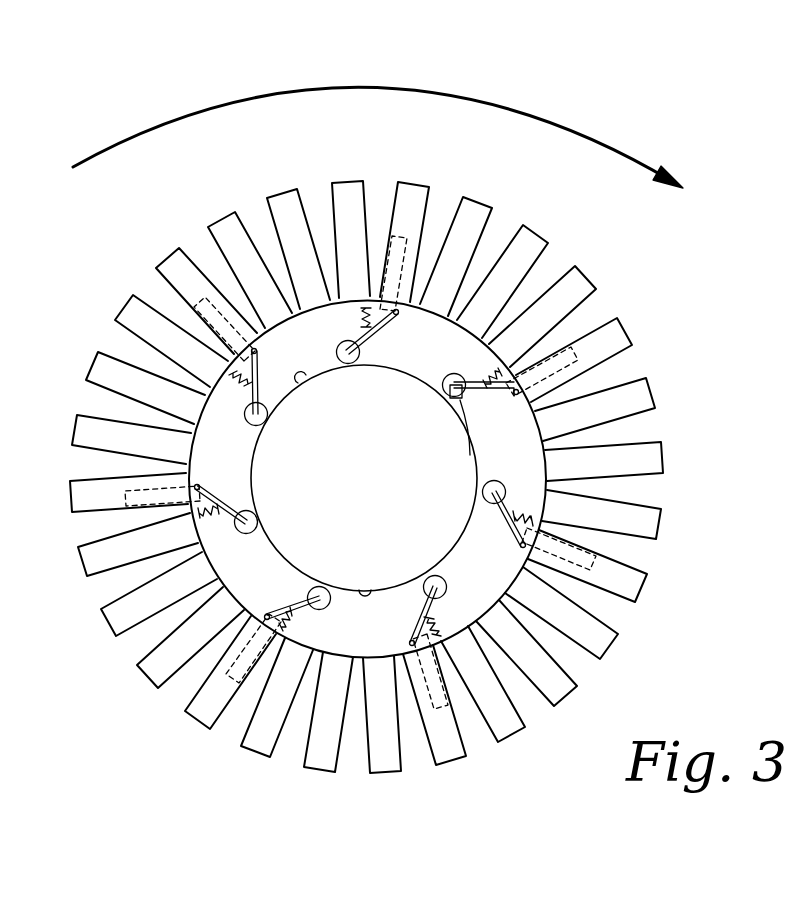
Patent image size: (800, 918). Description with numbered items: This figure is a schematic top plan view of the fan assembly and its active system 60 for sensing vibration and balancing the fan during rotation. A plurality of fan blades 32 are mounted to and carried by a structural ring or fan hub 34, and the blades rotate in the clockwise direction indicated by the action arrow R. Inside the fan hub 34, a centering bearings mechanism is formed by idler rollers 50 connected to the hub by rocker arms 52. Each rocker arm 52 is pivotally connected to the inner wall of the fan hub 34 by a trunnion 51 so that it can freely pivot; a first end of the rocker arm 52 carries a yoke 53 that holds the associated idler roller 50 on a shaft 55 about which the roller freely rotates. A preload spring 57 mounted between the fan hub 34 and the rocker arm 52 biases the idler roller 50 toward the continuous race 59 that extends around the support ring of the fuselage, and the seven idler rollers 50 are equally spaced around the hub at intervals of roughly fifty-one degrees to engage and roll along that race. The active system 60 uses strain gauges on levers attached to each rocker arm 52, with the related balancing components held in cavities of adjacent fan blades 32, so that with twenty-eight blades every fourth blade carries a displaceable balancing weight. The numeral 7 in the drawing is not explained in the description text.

The rotor assembly 7 is at (106, 587).
The fan blade 32 is at (465, 217).
The fan hub 34 is at (188, 468).
The idler roller 50 is at (352, 365).
The trunnion 51 is at (514, 395).
The rocker arm 52 is at (368, 345).
The yoke 53 is at (455, 440).
The shaft 55 is at (453, 402).
The preload spring 57 is at (366, 318).
The continuous race 59 is at (308, 380).
The active system 60 is at (400, 237).
The action arrow R is at (185, 113).